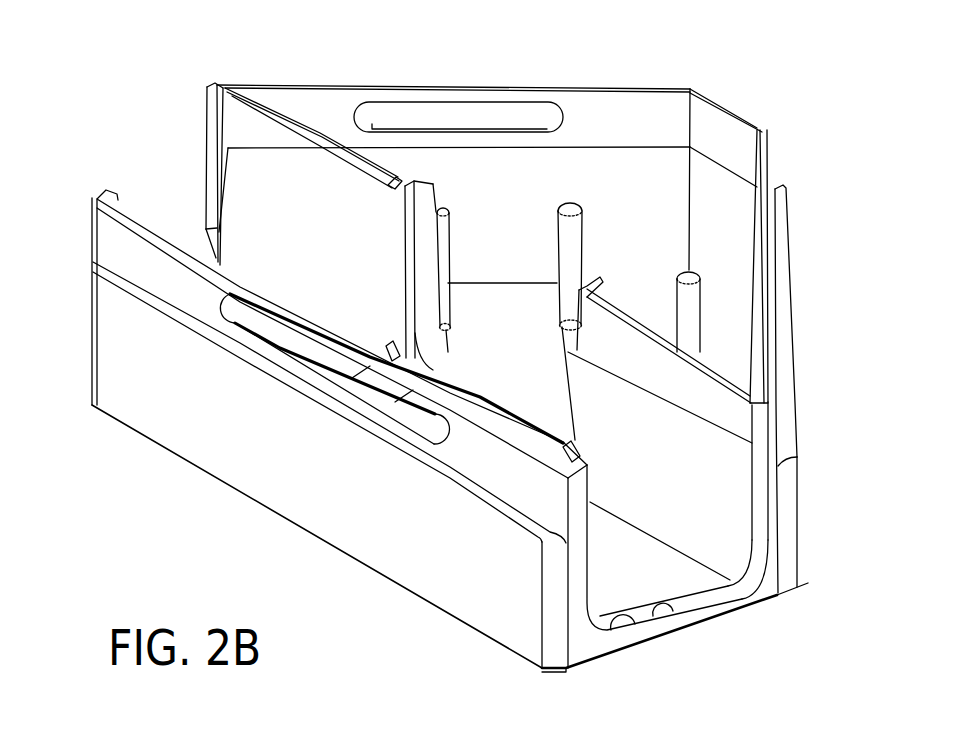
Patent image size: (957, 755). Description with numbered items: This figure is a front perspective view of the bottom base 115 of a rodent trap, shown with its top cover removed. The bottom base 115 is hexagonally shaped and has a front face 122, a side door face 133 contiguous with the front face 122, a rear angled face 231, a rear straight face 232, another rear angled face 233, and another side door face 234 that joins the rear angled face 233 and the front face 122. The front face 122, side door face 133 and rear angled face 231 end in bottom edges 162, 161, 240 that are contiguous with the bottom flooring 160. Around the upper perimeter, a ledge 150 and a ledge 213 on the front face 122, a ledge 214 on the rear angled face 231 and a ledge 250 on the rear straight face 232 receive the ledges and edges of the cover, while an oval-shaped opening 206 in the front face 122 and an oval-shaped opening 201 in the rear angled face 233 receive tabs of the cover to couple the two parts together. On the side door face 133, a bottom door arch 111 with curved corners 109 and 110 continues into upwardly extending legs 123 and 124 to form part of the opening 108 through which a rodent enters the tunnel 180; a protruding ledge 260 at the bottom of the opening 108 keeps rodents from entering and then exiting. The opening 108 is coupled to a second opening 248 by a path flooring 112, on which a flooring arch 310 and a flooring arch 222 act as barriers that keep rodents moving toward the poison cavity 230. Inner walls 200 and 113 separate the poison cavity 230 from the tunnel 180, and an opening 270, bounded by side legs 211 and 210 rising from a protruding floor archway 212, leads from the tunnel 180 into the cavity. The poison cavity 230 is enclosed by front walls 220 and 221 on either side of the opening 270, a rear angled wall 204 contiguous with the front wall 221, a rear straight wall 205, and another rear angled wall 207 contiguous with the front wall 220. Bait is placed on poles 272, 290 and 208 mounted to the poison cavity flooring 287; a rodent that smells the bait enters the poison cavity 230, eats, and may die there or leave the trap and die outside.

The bottom base 115 is at (586, 60).
The poison cavity 230 is at (589, 166).
The oval-shaped opening 201 is at (466, 117).
The rear angled wall 204 is at (529, 216).
The rear straight wall 205 is at (737, 216).
The rear straight face 232 is at (772, 126).
The rear angled wall 207 is at (750, 283).
The ledge 214 is at (778, 324).
The rear angled face 231 is at (806, 389).
The ledge 250 is at (776, 191).
The side door face 133 is at (799, 490).
The opening 108 is at (752, 471).
The leg 124 is at (768, 516).
The curved corner 110 is at (748, 562).
The path flooring 112 is at (652, 585).
The bottom door arch 111 is at (698, 608).
The curved corner 109 is at (625, 632).
The protruding ledge 260 is at (671, 614).
The bottom edge 240 is at (800, 588).
The bottom edge 161 is at (790, 600).
The leg 123 is at (580, 530).
The inner wall 113 is at (664, 455).
The front wall 220 is at (632, 307).
The pole 208 is at (694, 314).
The pole 290 is at (573, 226).
The poison cavity flooring 287 is at (546, 363).
The side leg 210 is at (573, 390).
The flooring arch 222 is at (565, 440).
The rear angled face 233 is at (199, 106).
The opening 248 is at (210, 195).
The tunnel 180 is at (234, 172).
The inner wall 200 is at (318, 261).
The front wall 221 is at (399, 175).
The opening 270 is at (422, 263).
The pole 272 is at (447, 241).
The side leg 211 is at (430, 293).
The front face 122 is at (336, 484).
The side door face 234 is at (90, 184).
The protruding floor archway 212 is at (452, 392).
The ledge 150 is at (127, 220).
The ledge 213 is at (440, 474).
The oval-shaped opening 206 is at (302, 344).
The flooring arch 310 is at (388, 344).
The bottom edge 162 is at (303, 527).
The bottom flooring 160 is at (405, 613).